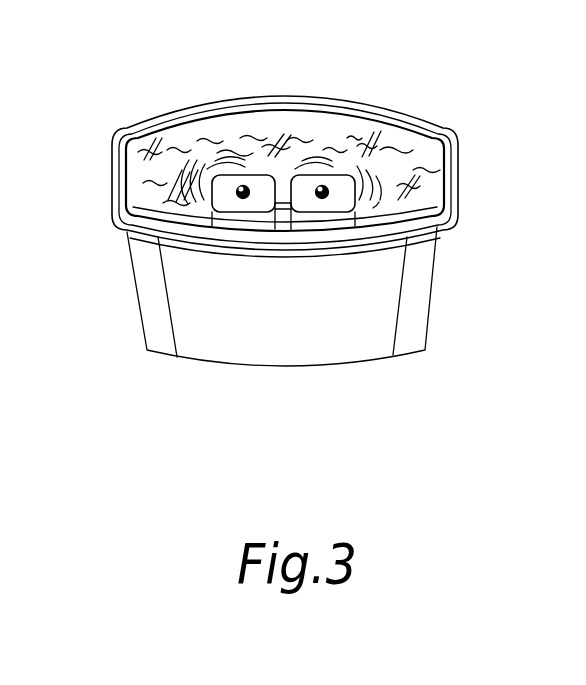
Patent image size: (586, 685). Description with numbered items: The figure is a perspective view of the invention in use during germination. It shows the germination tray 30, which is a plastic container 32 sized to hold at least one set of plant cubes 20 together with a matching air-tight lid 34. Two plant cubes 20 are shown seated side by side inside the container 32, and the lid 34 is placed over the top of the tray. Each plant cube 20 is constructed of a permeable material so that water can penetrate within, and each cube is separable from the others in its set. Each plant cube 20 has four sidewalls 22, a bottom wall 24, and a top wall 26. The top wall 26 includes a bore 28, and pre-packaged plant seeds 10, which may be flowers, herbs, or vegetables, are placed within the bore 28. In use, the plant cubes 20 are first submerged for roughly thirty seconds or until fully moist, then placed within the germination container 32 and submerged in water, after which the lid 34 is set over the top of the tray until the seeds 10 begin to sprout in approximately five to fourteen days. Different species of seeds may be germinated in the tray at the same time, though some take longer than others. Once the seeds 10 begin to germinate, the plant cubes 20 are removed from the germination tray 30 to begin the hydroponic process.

The plant seeds 10 is at (322, 198).
The plant cube 20 is at (345, 187).
The sidewalls 22 is at (235, 211).
The bottom wall 24 is at (283, 222).
The top wall 26 is at (212, 185).
The bore 28 is at (237, 196).
The germination tray 30 is at (410, 132).
The container 32 is at (247, 140).
The lid 34 is at (147, 123).